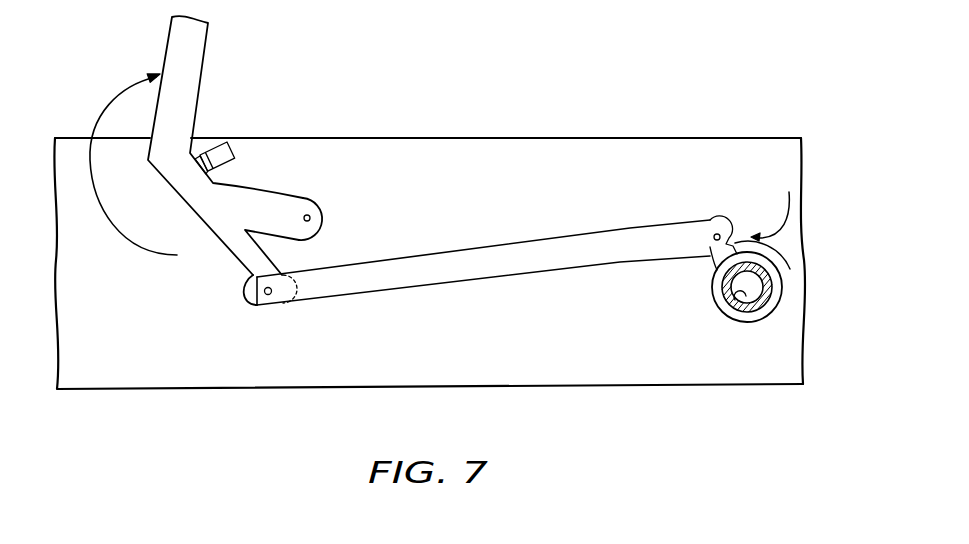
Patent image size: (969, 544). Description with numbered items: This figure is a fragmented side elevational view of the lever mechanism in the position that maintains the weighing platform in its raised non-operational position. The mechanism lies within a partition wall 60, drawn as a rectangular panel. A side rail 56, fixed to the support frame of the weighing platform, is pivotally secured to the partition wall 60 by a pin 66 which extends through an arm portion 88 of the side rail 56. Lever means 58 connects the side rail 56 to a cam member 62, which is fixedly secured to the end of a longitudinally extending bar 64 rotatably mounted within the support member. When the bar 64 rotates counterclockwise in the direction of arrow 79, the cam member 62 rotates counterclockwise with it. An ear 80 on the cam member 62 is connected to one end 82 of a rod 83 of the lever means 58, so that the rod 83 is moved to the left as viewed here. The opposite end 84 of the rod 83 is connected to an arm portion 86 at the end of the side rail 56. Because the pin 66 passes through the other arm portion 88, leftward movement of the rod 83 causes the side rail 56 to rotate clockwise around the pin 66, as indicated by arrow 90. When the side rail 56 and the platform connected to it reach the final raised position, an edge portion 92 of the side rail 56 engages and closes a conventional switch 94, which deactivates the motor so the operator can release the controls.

The side rail 56 is at (266, 184).
The lever means 58 is at (497, 263).
The partition wall 60 is at (460, 363).
The cam member 62 is at (713, 293).
The bar 64 is at (730, 296).
The pin 66 is at (311, 217).
The arrow 79 is at (769, 213).
The ear 80 is at (735, 244).
The end of rod 82 is at (712, 222).
The rod 83 is at (412, 268).
The opposite end of rod 84 is at (270, 300).
The arm portion 86 is at (252, 292).
The arm portion 88 is at (303, 197).
The arrow 90 is at (104, 102).
The edge portion 92 is at (198, 156).
The switch 94 is at (223, 155).